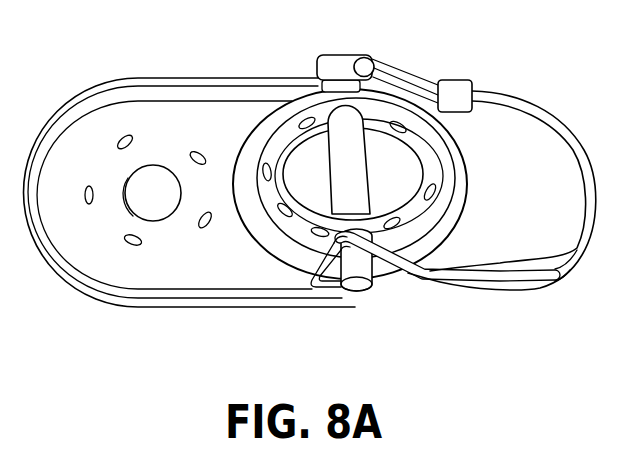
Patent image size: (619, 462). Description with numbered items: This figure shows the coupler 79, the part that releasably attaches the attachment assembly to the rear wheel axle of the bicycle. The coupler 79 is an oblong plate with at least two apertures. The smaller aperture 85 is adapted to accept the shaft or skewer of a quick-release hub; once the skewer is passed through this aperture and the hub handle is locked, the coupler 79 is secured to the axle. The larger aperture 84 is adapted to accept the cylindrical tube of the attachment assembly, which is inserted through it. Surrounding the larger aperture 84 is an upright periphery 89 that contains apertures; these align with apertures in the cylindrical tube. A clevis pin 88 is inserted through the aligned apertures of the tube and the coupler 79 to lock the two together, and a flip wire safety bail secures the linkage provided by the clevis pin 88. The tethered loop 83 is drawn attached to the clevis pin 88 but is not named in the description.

The coupler 79 is at (409, 59).
The cable loop 83 is at (557, 262).
The larger aperture 84 is at (382, 174).
The smaller aperture 85 is at (135, 197).
The clevis pin 88 is at (357, 270).
The upright periphery 89 is at (290, 219).